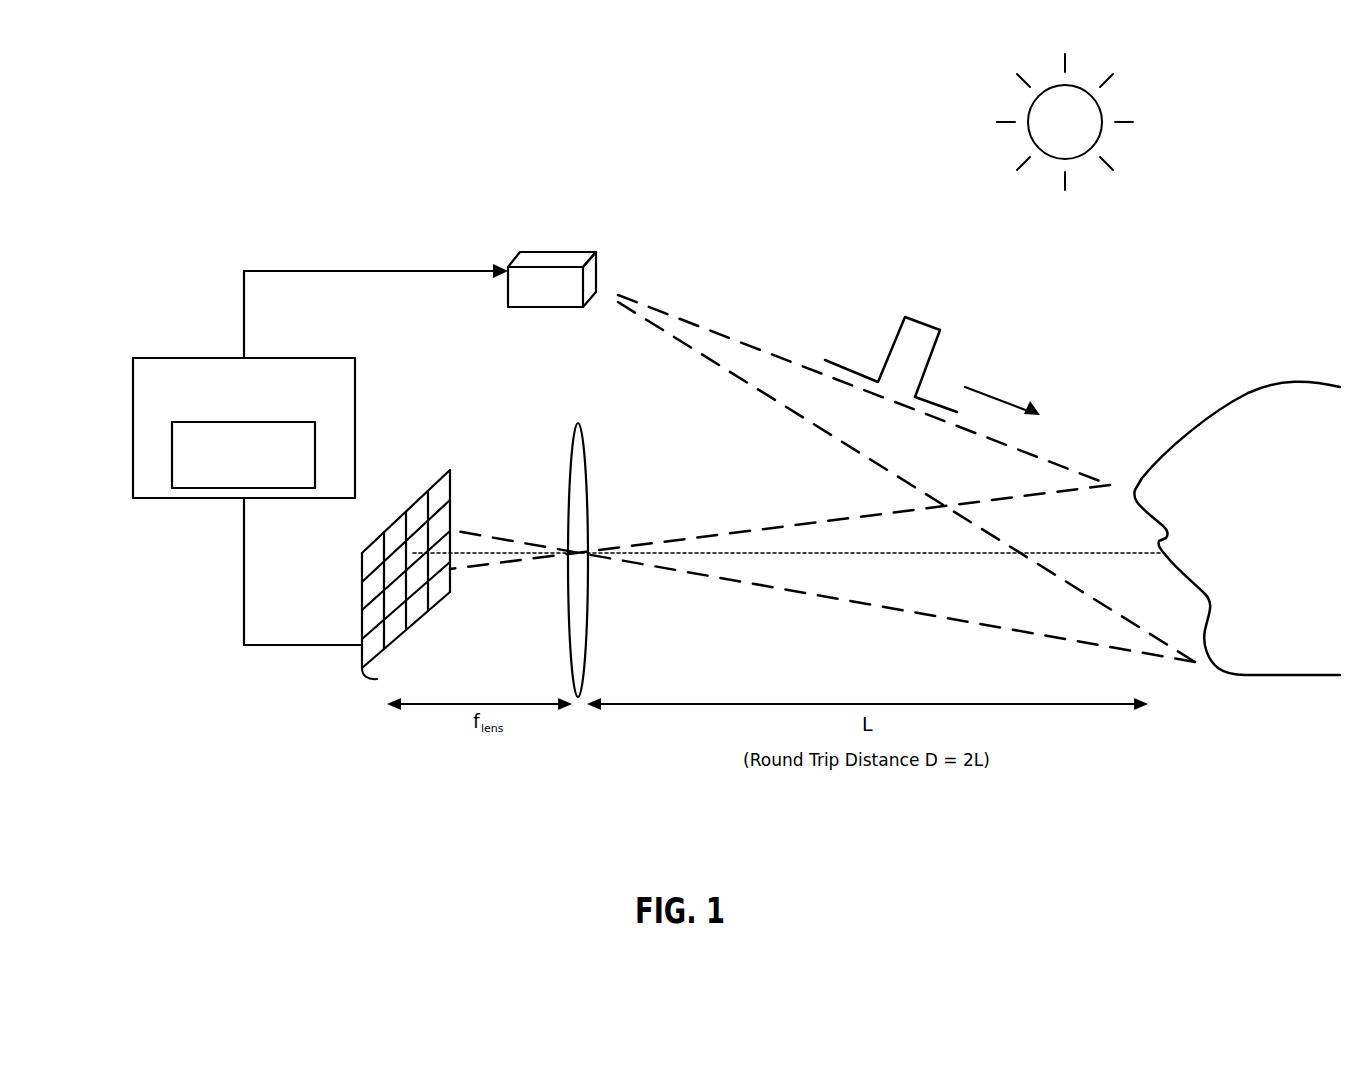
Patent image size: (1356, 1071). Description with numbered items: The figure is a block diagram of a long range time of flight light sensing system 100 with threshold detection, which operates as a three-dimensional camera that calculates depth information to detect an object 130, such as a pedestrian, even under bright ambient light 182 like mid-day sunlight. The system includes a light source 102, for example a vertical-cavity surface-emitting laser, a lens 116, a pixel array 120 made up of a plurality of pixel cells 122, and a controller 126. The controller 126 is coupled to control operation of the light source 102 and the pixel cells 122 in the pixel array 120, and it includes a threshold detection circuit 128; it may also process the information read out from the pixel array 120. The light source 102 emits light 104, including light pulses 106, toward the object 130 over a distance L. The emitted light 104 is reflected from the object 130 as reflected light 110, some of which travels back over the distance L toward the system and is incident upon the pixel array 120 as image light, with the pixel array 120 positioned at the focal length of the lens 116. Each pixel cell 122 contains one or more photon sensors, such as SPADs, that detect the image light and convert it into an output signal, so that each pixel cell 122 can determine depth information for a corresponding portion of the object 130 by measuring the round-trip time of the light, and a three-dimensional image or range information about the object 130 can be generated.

The time of flight light sensing system 100 is at (1270, 154).
The light source 102 is at (606, 255).
The emitted light 104 is at (906, 462).
The light pulses 106 is at (887, 352).
The reflected light 110 is at (804, 571).
The lens 116 is at (572, 434).
The pixel array 120 is at (452, 595).
The pixel cells 122 is at (438, 472).
The controller 126 is at (200, 358).
The threshold detection circuit 128 is at (215, 488).
The object 130 is at (1233, 388).
The bright ambient light 182 is at (1100, 108).